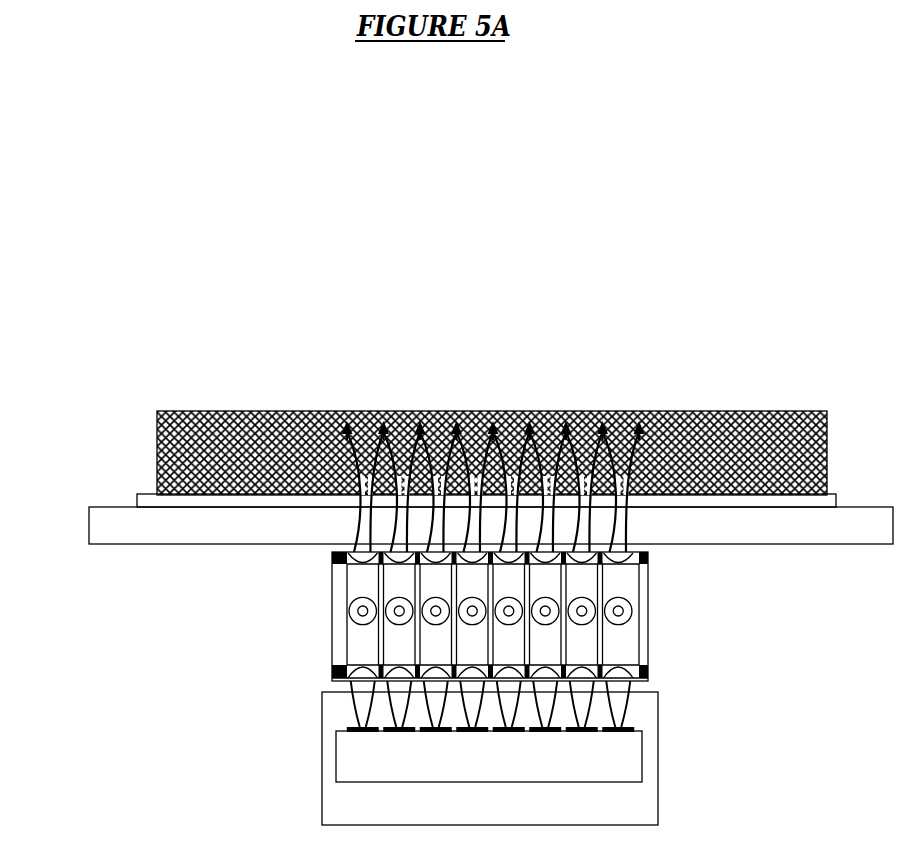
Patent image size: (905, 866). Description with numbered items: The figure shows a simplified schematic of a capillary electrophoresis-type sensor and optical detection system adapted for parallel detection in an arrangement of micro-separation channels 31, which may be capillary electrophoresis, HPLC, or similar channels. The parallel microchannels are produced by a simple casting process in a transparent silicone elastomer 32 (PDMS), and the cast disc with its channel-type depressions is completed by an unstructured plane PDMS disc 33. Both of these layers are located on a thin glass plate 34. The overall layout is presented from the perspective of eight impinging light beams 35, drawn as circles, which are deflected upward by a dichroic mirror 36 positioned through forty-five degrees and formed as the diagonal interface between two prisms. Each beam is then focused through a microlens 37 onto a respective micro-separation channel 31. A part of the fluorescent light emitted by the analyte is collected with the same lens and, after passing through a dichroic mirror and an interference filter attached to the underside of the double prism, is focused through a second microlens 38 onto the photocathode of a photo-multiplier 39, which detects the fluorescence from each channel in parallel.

The micro-separation channels 31 is at (637, 430).
The transparent silicone elastomer 32 is at (188, 433).
The unstructured plane PDMS disc 33 is at (175, 498).
The thin glass plate 34 is at (128, 528).
The impinging light beams 35 is at (622, 612).
The dichroic mirror 36 is at (628, 655).
The microlens 37 is at (333, 560).
The second microlens 38 is at (333, 670).
The photo-multiplier 39 is at (385, 736).